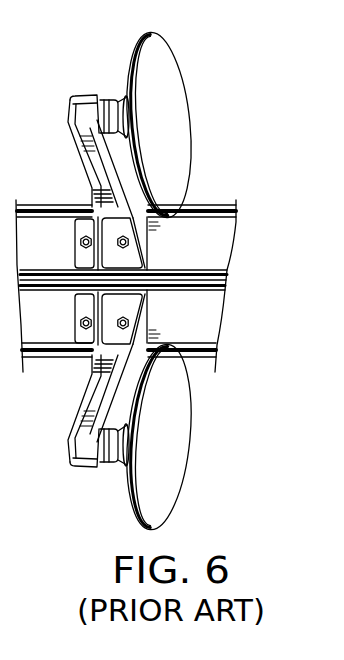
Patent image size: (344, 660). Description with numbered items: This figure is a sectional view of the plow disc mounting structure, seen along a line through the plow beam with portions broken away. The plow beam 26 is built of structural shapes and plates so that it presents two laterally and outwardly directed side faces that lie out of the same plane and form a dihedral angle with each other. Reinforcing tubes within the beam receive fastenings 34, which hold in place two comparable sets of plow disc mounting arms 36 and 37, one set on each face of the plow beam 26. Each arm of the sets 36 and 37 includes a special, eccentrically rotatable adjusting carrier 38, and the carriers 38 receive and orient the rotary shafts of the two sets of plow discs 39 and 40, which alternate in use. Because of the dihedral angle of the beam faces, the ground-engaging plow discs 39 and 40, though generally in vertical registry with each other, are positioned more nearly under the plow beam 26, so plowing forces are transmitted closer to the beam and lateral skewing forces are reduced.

The plow beam 26 is at (191, 207).
The fastenings 34 is at (79, 243).
The plow disc mounting arms 36 is at (88, 179).
The plow disc mounting arms 37 is at (82, 397).
The adjusting carriers 38 is at (115, 98).
The plow discs 39 is at (178, 85).
The plow discs 40 is at (173, 415).